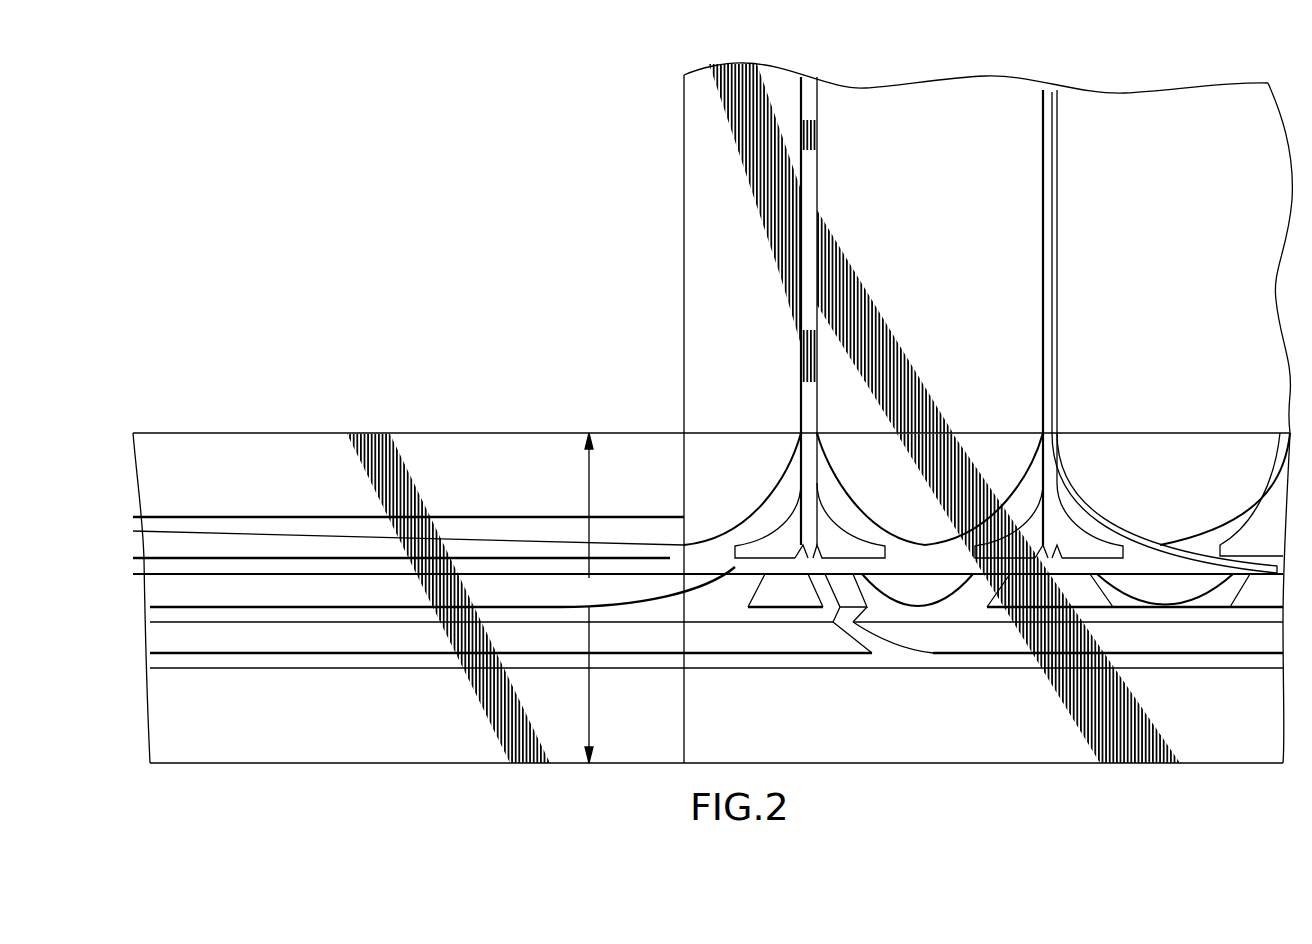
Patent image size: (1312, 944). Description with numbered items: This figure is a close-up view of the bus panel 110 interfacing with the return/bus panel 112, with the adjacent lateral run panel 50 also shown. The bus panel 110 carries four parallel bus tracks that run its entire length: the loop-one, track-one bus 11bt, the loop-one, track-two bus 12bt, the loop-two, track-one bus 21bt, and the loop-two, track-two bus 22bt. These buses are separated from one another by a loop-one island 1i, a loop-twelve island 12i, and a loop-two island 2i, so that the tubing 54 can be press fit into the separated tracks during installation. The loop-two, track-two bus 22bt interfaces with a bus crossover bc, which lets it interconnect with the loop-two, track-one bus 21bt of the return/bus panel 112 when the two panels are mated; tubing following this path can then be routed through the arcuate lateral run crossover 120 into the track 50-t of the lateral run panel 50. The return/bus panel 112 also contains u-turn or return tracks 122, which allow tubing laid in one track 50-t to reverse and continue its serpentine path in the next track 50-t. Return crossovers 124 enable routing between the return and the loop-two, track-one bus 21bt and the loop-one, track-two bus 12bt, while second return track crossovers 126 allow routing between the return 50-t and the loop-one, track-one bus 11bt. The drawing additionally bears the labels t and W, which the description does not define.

The bus panel 110 is at (537, 787).
The return/bus panel 112 is at (1212, 724).
The lateral run panel 50 is at (1175, 237).
The track of the lateral run panel 50-t is at (808, 177).
The slot width t is at (838, 470).
The tubing 54 is at (1052, 333).
The lateral run crossover 120 is at (783, 492).
The second return track crossover 126 is at (823, 594).
The return track 122 is at (868, 505).
The return crossover 124 is at (1017, 540).
The loop-2, track-2 bus 22bt is at (175, 518).
The bus crossover bc is at (485, 530).
The loop-2 island 2i is at (170, 545).
The loop-12 island 12i is at (218, 597).
The loop-1 island 1i is at (277, 637).
The loop-2, track-1 bus 21bt is at (348, 568).
The loop-1, track-2 bus 12bt is at (393, 613).
The loop-1, track-1 bus 11bt is at (452, 657).
The width W is at (591, 598).